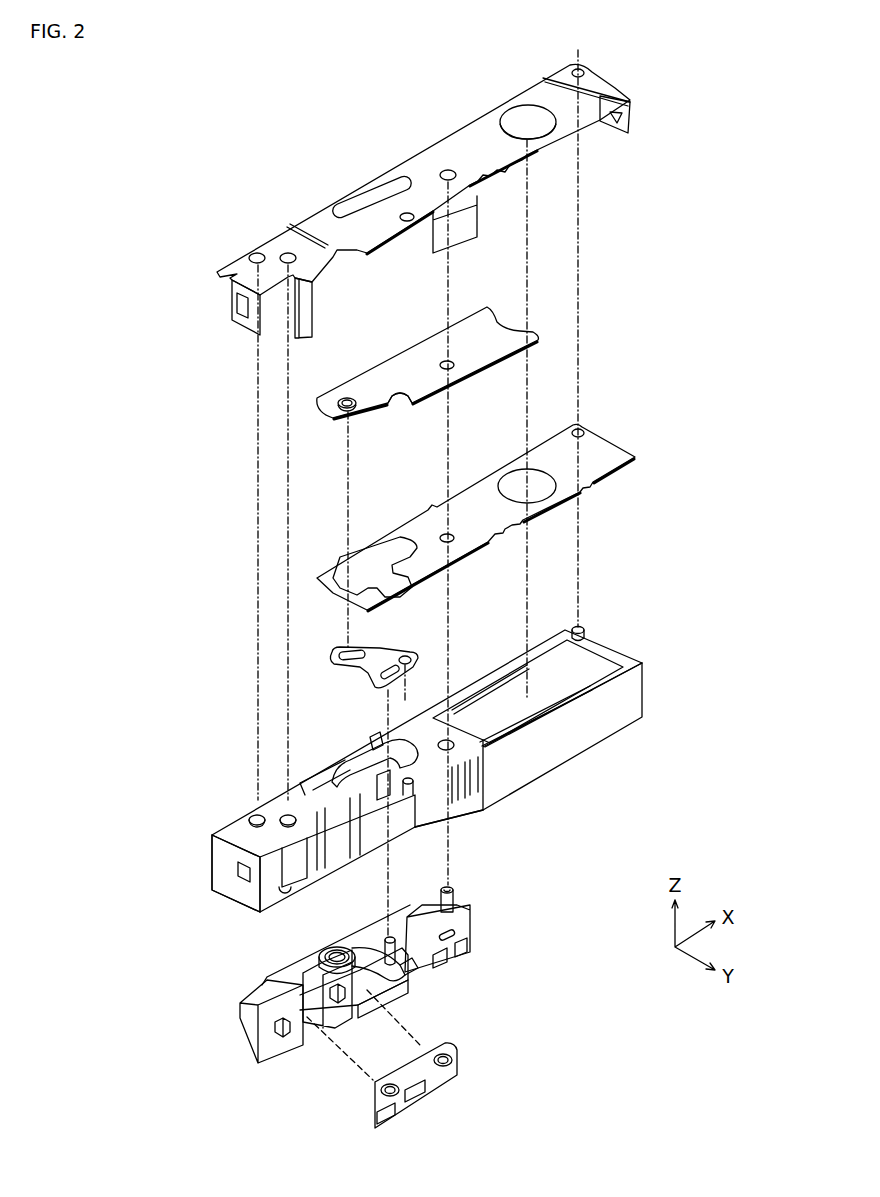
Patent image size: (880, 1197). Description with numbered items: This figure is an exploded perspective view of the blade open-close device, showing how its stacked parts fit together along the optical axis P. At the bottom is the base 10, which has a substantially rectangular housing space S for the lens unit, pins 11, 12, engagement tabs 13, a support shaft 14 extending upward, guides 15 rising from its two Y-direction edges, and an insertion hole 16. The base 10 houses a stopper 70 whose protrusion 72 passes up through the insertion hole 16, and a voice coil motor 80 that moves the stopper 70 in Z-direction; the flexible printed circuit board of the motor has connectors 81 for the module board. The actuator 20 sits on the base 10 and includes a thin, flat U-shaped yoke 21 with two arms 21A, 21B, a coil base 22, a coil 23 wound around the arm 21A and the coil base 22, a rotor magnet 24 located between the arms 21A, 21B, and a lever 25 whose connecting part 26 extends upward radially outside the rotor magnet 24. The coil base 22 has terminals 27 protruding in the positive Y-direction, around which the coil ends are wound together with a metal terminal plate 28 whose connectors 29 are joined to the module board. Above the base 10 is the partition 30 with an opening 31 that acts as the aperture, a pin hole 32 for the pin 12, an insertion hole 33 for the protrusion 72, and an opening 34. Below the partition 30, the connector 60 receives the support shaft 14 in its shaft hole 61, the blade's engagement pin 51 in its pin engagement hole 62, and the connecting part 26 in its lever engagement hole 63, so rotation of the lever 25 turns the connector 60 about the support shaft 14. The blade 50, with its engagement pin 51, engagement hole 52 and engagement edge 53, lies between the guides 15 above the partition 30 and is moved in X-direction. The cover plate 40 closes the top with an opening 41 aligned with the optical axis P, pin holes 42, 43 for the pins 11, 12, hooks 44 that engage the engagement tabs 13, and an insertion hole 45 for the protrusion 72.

The base 10 is at (405, 750).
The pin 11 is at (255, 814).
The pin 12 is at (583, 628).
The engagement tab 13 is at (238, 868).
The support shaft 14 is at (444, 752).
The guide 15 is at (490, 693).
The insertion hole 16 is at (478, 753).
The actuator 20 is at (322, 994).
The yoke 21 is at (300, 968).
The arm 21A is at (380, 985).
The arm 21B is at (385, 940).
The coil base 22 is at (245, 998).
The coil 23 is at (320, 1030).
The rotor magnet 24 is at (335, 947).
The lever 25 is at (400, 923).
The connecting part 26 is at (410, 970).
The terminal 27 is at (330, 1010).
The terminal plate 28 is at (443, 1089).
The connector 29 is at (385, 1122).
The partition 30 is at (488, 485).
The opening 31 is at (515, 480).
The pin hole 32 is at (583, 428).
The insertion hole 33 is at (440, 533).
The opening 34 is at (375, 567).
The cover plate 40 is at (416, 206).
The opening 41 is at (512, 118).
The pin hole 42 is at (287, 253).
The pin hole 43 is at (585, 73).
The hook 44 is at (632, 120).
The insertion hole 45 is at (448, 170).
The blade 50 is at (428, 348).
The engagement pin 51 is at (347, 398).
The engagement hole 52 is at (448, 360).
The engagement edge 53 is at (399, 388).
The connector 60 is at (375, 667).
The shaft hole 61 is at (410, 653).
The pin engagement hole 62 is at (335, 667).
The lever engagement hole 63 is at (373, 688).
The stopper 70 is at (482, 928).
The protrusion 72 is at (455, 893).
The voice coil motor 80 is at (481, 950).
The connector 81 is at (450, 950).
The housing space S is at (497, 667).
The optical axis P is at (530, 563).